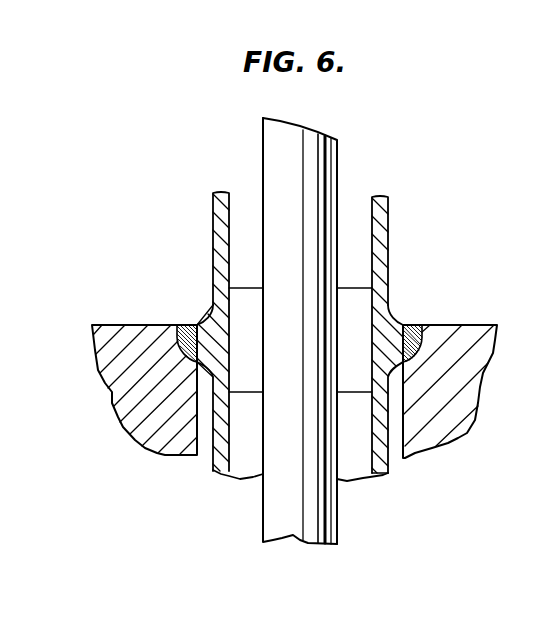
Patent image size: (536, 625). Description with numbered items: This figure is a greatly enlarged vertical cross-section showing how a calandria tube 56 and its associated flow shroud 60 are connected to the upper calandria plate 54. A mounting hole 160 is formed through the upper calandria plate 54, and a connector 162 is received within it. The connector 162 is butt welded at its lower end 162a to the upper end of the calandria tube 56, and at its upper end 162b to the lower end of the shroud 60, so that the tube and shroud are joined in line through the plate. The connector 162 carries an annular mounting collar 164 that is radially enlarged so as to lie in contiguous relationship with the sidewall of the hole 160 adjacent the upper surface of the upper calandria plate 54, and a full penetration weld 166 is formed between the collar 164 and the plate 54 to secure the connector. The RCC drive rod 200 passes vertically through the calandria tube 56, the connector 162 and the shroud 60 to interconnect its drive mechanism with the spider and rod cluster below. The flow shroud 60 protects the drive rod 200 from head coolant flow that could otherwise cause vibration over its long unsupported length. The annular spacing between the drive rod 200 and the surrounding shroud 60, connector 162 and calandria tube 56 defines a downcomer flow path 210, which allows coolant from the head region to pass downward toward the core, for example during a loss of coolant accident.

The RCC drive rod 200 is at (338, 141).
The downcomer flow path 210 is at (352, 198).
The flow shroud 60 is at (213, 235).
The connector 162 is at (204, 324).
The lower end of connector 162a is at (180, 426).
The upper end of connector 162b is at (215, 280).
The mounting hole 160 is at (199, 428).
The annular mounting collar 164 is at (399, 322).
The full penetration weld 166 is at (416, 327).
The upper calandria plate 54 is at (465, 393).
The calandria tube 56 is at (383, 475).